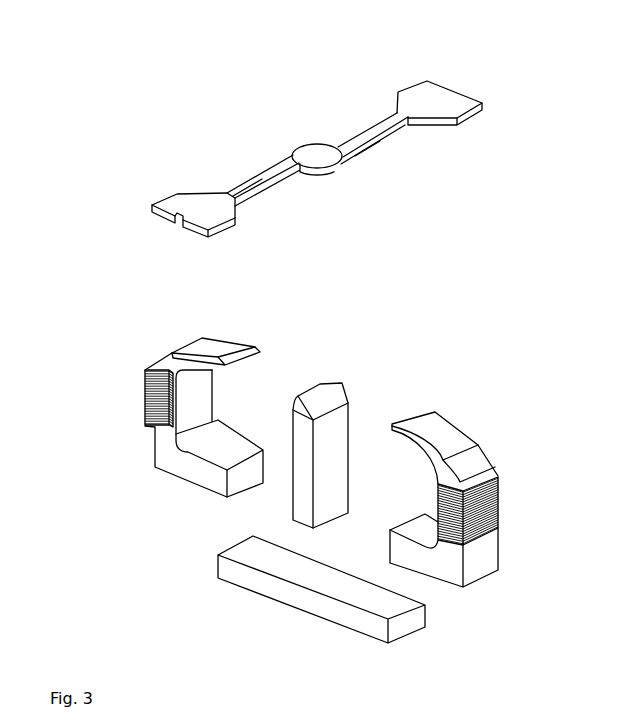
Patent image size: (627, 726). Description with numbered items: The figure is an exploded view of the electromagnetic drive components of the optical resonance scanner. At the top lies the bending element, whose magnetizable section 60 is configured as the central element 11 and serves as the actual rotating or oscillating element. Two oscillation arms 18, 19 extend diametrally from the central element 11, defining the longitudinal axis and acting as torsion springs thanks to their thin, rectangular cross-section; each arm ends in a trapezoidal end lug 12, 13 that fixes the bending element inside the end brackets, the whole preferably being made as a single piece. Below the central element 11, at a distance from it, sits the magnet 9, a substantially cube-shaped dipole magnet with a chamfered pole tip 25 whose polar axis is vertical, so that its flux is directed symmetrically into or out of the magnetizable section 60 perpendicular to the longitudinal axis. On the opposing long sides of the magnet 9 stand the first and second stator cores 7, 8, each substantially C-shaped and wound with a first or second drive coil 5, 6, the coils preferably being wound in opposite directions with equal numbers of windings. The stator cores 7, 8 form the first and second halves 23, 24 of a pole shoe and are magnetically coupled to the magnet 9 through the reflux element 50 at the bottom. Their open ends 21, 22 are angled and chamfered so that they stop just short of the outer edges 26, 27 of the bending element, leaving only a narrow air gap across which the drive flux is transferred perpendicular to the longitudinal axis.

The first electromagnetic drive coil 5 is at (155, 393).
The second electromagnetic drive coil 6 is at (498, 472).
The first stator core 7 is at (180, 416).
The second stator core 8 is at (490, 501).
The magnet 9 is at (353, 419).
The central element 11 is at (342, 150).
The end lug 12 is at (195, 203).
The end lug 13 is at (438, 104).
The oscillation arm 18 is at (277, 188).
The oscillation arm 19 is at (428, 168).
The open end of pole shoe 21 is at (238, 352).
The open end of pole shoe 22 is at (420, 418).
The first half of pole shoe 23 is at (167, 457).
The second half of pole shoe 24 is at (475, 573).
The pole tip 25 is at (325, 402).
The outer edge of bending element 26 is at (295, 163).
The outer edge of bending element 27 is at (318, 166).
The reflux element 50 is at (295, 595).
The magnetizable section 60 is at (337, 158).